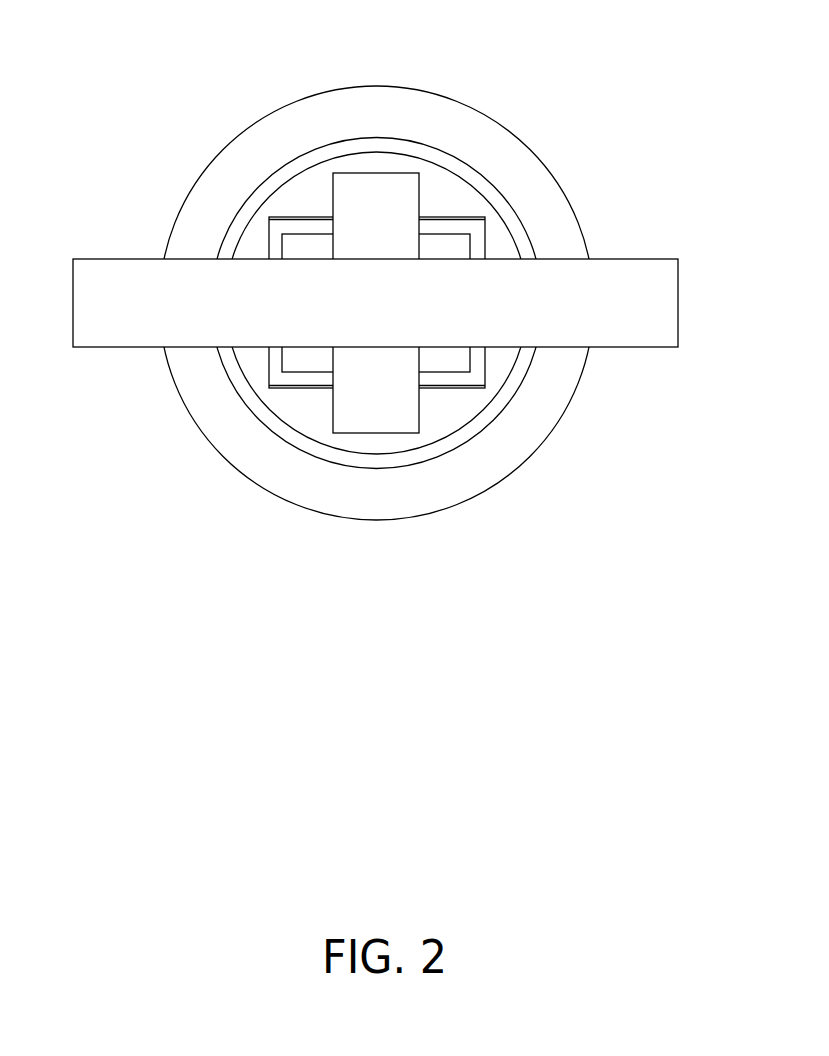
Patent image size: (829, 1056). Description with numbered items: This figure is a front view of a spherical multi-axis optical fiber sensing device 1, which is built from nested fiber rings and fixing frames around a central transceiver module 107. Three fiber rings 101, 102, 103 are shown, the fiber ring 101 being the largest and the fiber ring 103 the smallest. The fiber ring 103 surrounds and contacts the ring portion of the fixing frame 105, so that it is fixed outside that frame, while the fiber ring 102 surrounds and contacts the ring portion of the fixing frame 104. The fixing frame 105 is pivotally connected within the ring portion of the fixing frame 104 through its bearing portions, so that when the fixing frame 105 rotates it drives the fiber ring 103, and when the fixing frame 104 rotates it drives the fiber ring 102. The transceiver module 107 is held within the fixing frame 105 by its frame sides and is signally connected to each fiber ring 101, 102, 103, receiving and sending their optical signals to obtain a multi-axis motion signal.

The spherical multi-axis optical fiber sensing device 1 is at (98, 97).
The fiber ring 101 is at (628, 280).
The fiber ring 102 is at (422, 123).
The fiber ring 103 is at (365, 185).
The fixing frame 104 is at (495, 197).
The fixing frame 105 is at (450, 225).
The transceiver module 107 is at (458, 250).